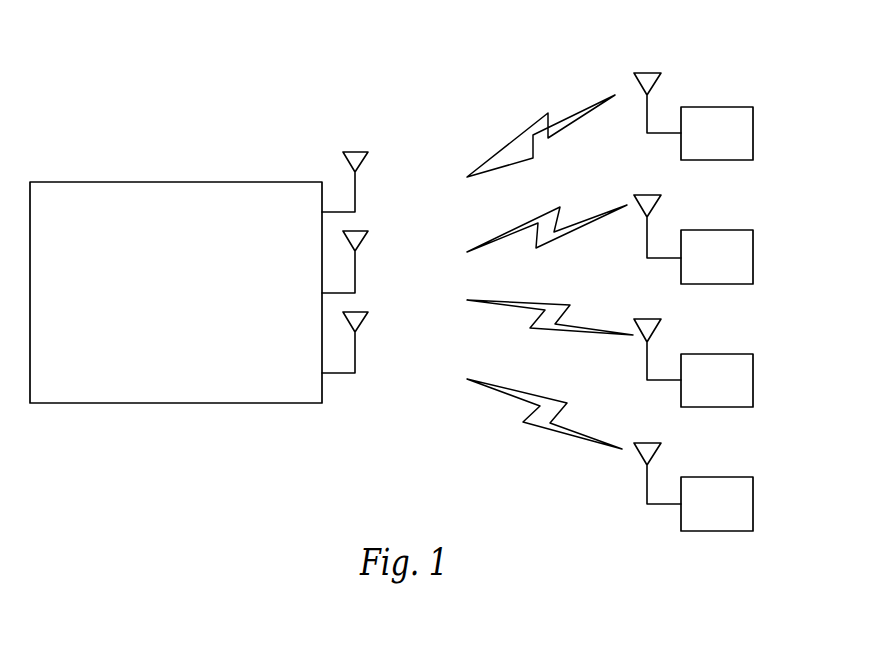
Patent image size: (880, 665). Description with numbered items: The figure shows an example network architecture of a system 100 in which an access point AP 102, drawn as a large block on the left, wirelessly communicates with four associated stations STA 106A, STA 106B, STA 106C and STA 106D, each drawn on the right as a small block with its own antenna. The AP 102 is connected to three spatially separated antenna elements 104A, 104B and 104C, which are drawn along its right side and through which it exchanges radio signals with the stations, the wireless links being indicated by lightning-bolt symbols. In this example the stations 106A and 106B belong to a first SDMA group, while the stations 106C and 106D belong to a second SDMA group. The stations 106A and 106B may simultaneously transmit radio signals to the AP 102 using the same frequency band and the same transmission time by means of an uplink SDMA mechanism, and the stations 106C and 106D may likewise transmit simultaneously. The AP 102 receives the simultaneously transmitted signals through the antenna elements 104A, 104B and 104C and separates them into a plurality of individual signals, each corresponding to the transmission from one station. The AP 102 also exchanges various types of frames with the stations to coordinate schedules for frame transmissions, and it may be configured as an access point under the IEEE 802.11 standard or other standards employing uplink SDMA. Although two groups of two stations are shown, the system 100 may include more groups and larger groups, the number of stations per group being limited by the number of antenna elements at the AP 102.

The system 100 is at (78, 30).
The AP 102 is at (176, 182).
The antenna element 104A is at (368, 152).
The antenna element 104B is at (368, 231).
The antenna element 104C is at (368, 312).
The STA 106A is at (716, 107).
The STA 106B is at (716, 231).
The STA 106C is at (716, 354).
The STA 106D is at (716, 477).